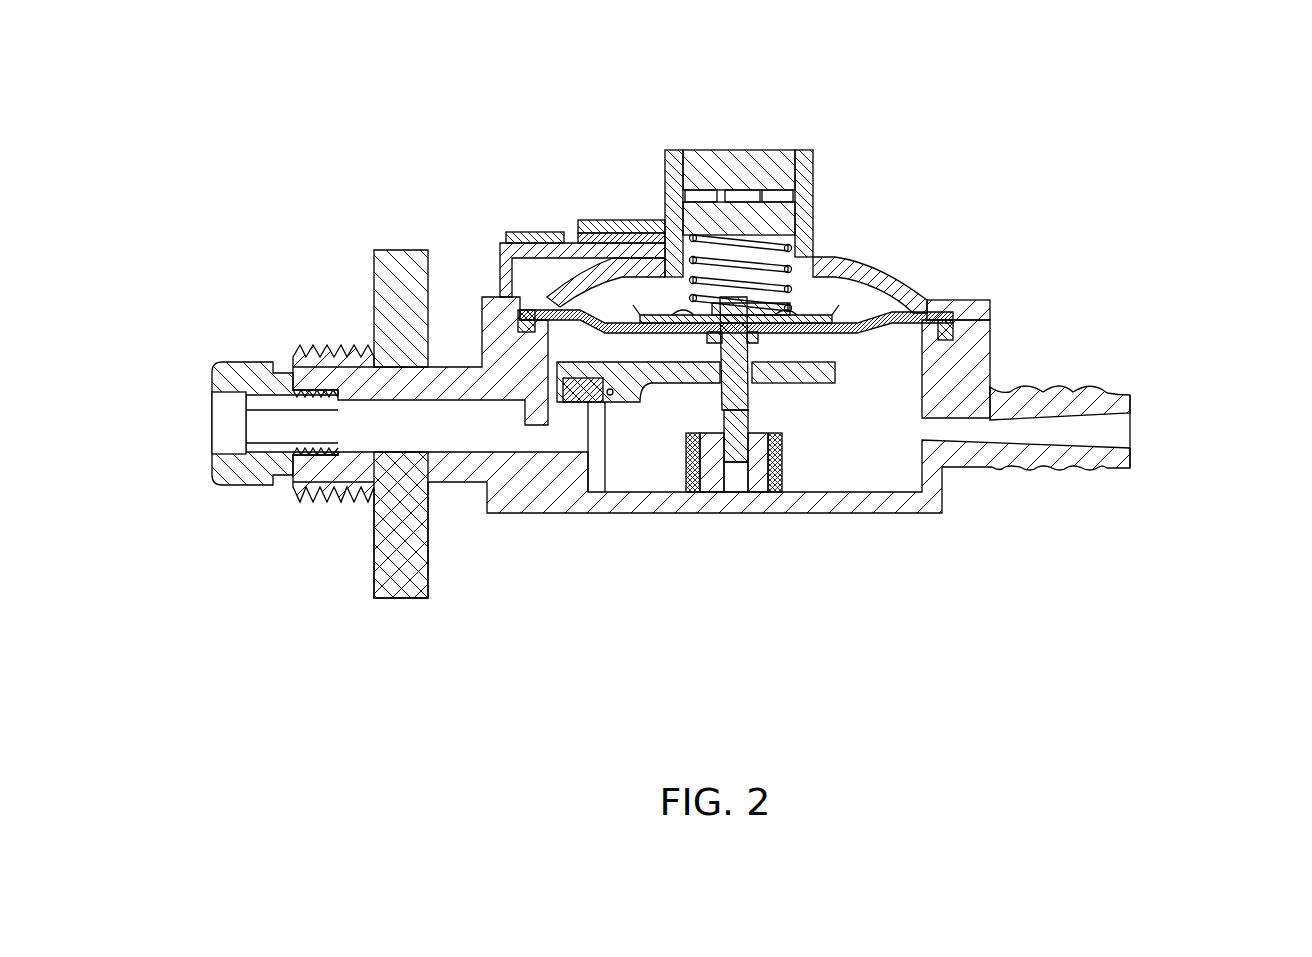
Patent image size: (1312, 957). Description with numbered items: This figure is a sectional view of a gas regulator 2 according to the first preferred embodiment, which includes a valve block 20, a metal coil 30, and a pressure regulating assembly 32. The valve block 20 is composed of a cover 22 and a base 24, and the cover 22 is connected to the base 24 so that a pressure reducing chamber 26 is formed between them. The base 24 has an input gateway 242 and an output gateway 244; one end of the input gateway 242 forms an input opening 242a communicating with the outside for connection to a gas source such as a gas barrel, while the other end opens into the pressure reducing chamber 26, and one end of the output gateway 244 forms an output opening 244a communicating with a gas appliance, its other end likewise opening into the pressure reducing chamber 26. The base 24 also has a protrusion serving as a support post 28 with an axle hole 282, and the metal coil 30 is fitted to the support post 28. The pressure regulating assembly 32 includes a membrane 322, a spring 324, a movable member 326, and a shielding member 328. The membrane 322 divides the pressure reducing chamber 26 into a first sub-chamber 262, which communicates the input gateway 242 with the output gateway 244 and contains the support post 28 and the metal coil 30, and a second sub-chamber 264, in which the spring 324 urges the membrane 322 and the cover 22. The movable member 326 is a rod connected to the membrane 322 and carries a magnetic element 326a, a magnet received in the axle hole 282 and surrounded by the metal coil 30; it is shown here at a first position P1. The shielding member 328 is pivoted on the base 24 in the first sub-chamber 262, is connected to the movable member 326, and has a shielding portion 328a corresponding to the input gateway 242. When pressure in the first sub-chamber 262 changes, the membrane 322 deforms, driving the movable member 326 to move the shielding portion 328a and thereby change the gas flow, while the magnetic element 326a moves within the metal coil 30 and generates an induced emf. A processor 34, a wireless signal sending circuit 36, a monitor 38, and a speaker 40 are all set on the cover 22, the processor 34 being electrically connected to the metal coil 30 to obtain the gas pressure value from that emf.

The gas regulator 2 is at (1112, 95).
The valve block 20 is at (1044, 343).
The cover 22 is at (987, 306).
The base 24 is at (970, 353).
The input gateway 242 is at (450, 438).
The input opening 242a is at (205, 437).
The output gateway 244 is at (1093, 437).
The output opening 244a is at (1133, 430).
The pressure reducing chamber 26 is at (945, 228).
The first sub-chamber 262 is at (930, 300).
The second sub-chamber 264 is at (913, 340).
The support post 28 is at (758, 463).
The axle hole 282 is at (733, 489).
The metal coil 30 is at (783, 463).
The pressure regulating assembly 32 is at (799, 304).
The membrane 322 is at (883, 305).
The spring 324 is at (757, 263).
The movable member 326 is at (748, 390).
The magnetic element 326a is at (725, 443).
The shielding member 328 is at (667, 374).
The shielding portion 328a is at (594, 397).
The processor 34 is at (656, 237).
The wireless signal sending circuit 36 is at (598, 232).
The monitor 38 is at (632, 240).
The speaker 40 is at (535, 232).
The first position P1 is at (724, 471).